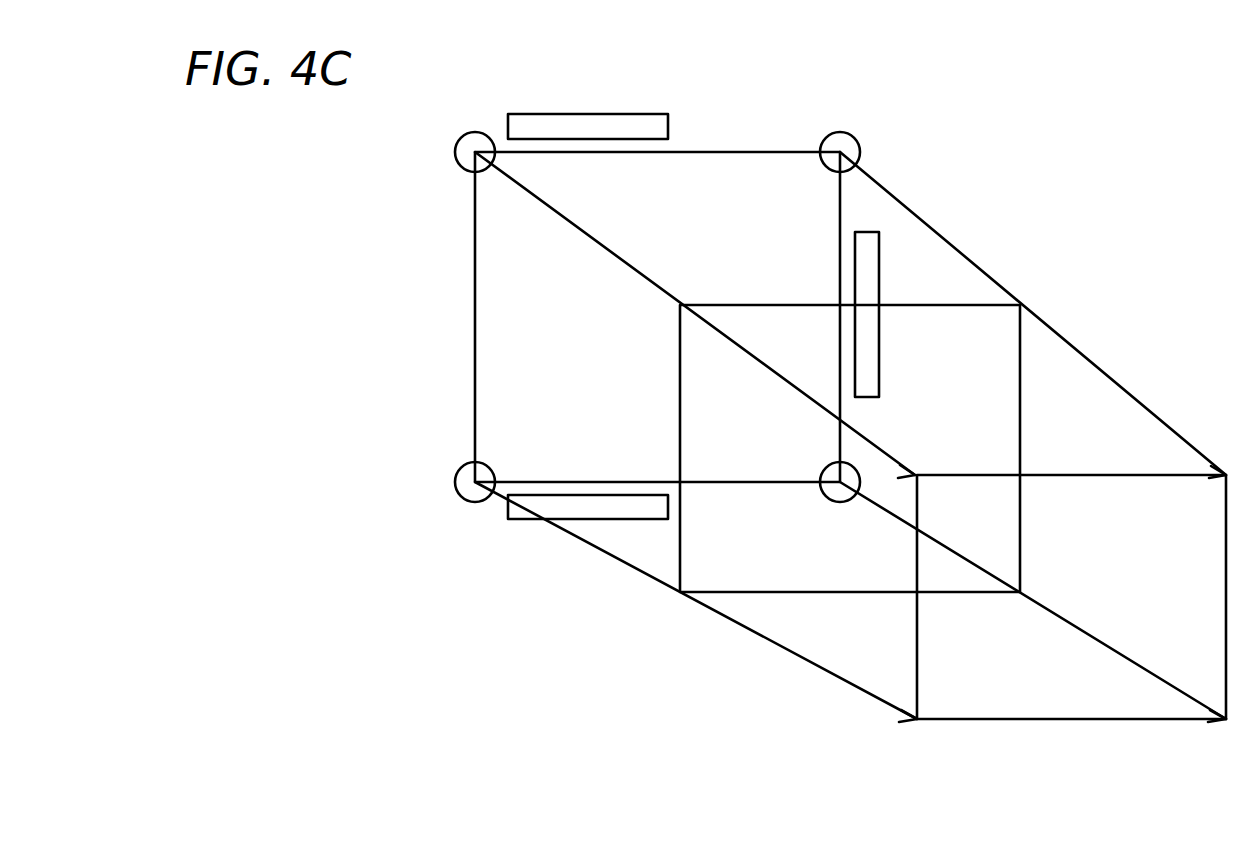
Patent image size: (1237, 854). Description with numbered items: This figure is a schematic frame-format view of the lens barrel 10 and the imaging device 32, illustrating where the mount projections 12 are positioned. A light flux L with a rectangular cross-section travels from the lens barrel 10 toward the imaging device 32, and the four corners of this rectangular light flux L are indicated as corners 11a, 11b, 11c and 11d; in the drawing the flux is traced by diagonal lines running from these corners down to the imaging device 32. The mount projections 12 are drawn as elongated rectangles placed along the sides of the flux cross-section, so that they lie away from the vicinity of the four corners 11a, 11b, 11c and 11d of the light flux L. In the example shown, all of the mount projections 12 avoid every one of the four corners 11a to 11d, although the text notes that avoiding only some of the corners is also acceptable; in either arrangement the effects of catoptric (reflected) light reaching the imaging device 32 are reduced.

The lens barrel 10 is at (736, 137).
The corner of the light flux 11a is at (455, 152).
The corner of the light flux 11b is at (455, 482).
The corner of the light flux 11c is at (853, 464).
The corner of the light flux 11d is at (843, 132).
The mount projection 12 is at (565, 125).
The imaging device 32 is at (1078, 685).
The light flux L is at (807, 638).